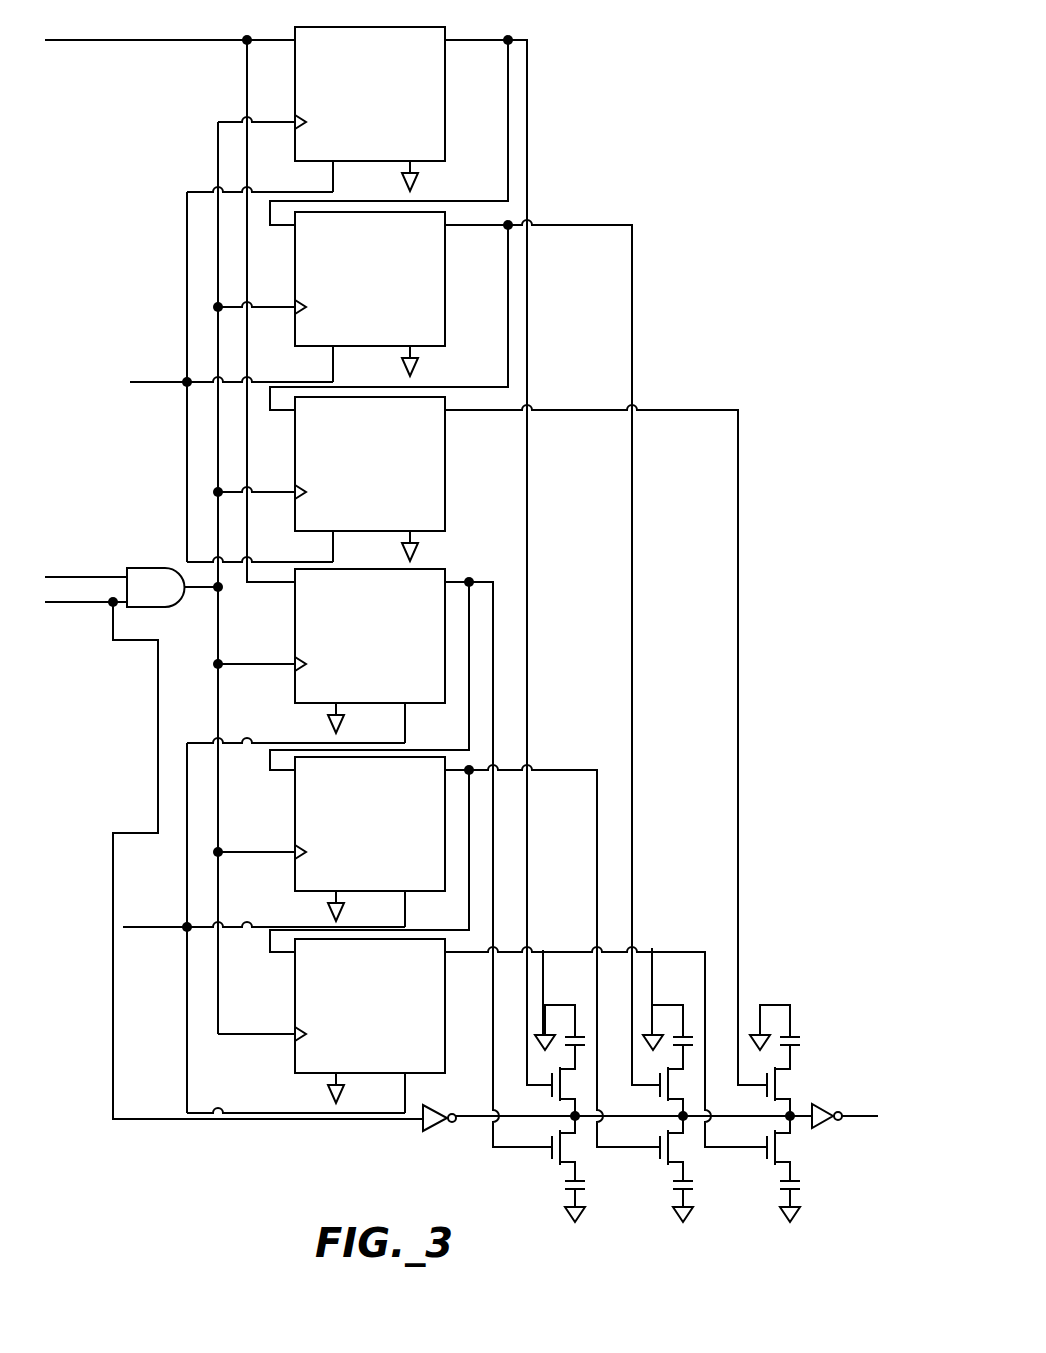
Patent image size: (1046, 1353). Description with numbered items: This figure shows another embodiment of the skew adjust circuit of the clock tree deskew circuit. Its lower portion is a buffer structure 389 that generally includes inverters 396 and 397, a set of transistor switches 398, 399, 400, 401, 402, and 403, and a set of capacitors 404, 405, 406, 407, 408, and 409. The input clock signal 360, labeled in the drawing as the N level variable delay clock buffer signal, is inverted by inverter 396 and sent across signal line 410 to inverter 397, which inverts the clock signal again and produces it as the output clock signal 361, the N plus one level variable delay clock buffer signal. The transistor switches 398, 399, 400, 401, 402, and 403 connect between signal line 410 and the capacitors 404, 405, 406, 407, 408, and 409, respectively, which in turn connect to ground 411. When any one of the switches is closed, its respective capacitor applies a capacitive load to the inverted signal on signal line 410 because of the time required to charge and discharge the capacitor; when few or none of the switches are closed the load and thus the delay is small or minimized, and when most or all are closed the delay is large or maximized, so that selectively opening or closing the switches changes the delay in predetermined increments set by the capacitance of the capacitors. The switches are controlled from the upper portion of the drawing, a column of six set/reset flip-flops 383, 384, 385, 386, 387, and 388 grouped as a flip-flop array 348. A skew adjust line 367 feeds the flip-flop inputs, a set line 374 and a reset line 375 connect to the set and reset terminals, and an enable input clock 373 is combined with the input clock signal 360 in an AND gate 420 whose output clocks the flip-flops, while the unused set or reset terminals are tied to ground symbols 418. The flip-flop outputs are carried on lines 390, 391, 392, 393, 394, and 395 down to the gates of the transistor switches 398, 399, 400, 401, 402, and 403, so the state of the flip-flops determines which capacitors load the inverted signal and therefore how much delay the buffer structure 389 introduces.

The flip-flop array 348 is at (596, 166).
The input clock signal 360 is at (58, 602).
The output clock signal 361 is at (865, 1114).
The skew adjust line 367 is at (167, 47).
The enable input clock line 373 is at (120, 570).
The set line 374 is at (152, 384).
The reset line 375 is at (178, 935).
The set/reset flip-flop 383 is at (445, 113).
The set/reset flip-flop 384 is at (445, 302).
The set/reset flip-flop 385 is at (445, 510).
The set/reset flip-flop 386 is at (293, 678).
The set/reset flip-flop 387 is at (293, 866).
The set/reset flip-flop 388 is at (293, 1055).
The buffer structure 389 is at (776, 944).
The flip-flop output line 390 is at (527, 46).
The flip-flop output line 391 is at (568, 224).
The flip-flop output line 392 is at (675, 410).
The flip-flop output line 393 is at (490, 580).
The flip-flop output line 394 is at (552, 770).
The flip-flop output line 395 is at (668, 950).
The inverter 396 is at (437, 1130).
The inverter 397 is at (835, 1102).
The transistor switch 398 is at (548, 1096).
The transistor switch 399 is at (655, 1096).
The transistor switch 400 is at (762, 1096).
The transistor switch 401 is at (548, 1158).
The transistor switch 402 is at (656, 1158).
The transistor switch 403 is at (763, 1158).
The capacitor 404 is at (587, 1037).
The capacitor 405 is at (695, 1037).
The capacitor 406 is at (802, 1037).
The capacitor 407 is at (562, 1182).
The capacitor 408 is at (670, 1182).
The capacitor 409 is at (777, 1182).
The signal line 410 is at (455, 1113).
The ground 411 is at (543, 950).
The ground 418 is at (412, 188).
The AND gate 420 is at (140, 607).